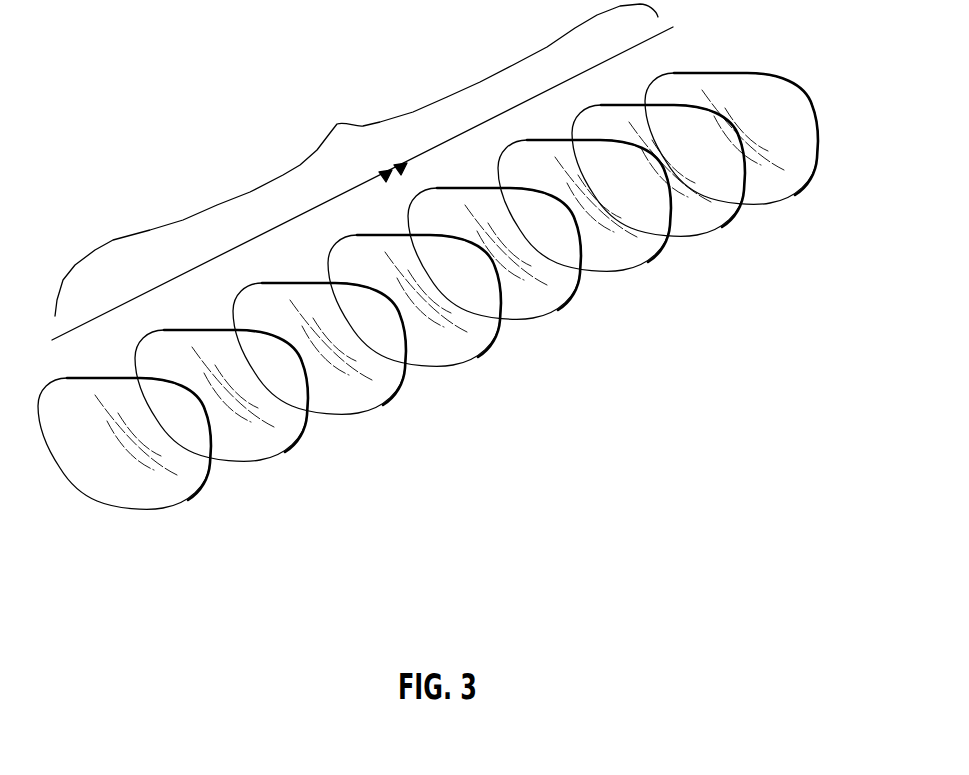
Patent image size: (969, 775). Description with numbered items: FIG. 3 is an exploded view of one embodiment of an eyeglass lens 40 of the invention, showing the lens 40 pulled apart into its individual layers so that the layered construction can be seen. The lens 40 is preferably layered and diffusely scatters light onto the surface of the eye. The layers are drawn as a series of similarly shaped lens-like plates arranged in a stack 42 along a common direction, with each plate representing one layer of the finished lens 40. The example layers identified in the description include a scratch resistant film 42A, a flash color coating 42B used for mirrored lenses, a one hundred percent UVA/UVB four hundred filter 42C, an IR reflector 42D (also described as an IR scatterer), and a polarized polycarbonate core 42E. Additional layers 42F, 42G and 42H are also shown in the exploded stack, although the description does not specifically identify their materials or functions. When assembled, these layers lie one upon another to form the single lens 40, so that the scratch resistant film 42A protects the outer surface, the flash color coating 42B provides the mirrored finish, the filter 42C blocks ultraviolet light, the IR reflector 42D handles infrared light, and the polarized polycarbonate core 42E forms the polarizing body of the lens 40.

The lens 40 is at (140, 565).
The direction of travel / lens band 42 is at (337, 124).
The scratch resistant film 42A is at (183, 492).
The flash color coating 42B is at (282, 447).
The UVA/UVB 400 filter 42C is at (357, 402).
The IR reflector 42D is at (455, 355).
The polarized polycarbonate core 42E is at (538, 305).
The lens 42F is at (632, 260).
The lens 42G is at (707, 223).
The lens 42H is at (787, 190).